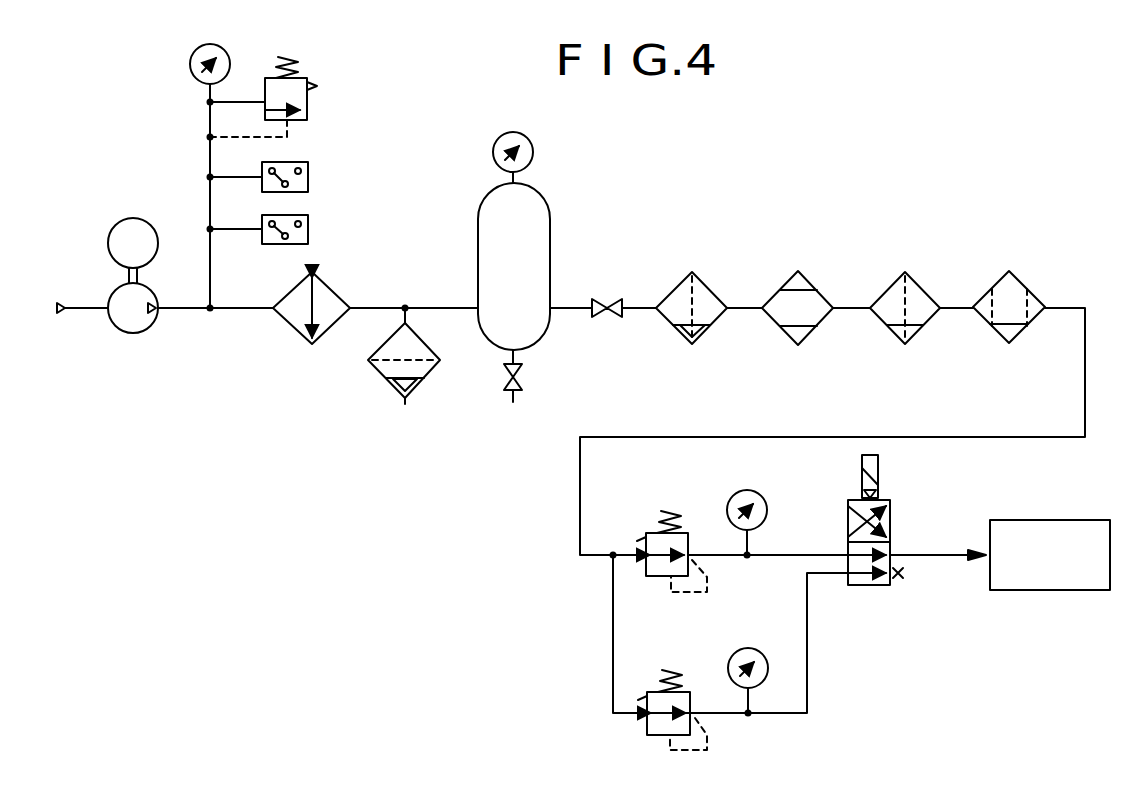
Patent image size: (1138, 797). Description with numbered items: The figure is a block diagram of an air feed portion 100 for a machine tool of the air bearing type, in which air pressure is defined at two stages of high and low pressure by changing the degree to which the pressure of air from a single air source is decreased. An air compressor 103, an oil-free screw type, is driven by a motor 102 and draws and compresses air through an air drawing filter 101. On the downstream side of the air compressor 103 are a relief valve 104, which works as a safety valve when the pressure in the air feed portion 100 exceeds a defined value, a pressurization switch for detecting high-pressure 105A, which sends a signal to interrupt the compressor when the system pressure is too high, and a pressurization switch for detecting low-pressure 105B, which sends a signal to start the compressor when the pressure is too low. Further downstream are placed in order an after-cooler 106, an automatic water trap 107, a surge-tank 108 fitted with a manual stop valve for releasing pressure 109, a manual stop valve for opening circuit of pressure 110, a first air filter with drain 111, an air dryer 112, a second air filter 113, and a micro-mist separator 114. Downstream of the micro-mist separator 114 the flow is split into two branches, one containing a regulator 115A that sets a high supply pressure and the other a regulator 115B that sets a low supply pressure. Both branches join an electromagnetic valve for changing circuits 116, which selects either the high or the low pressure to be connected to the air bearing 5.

The air feed portion 100 is at (846, 198).
The air drawing filter 101 is at (60, 316).
The motor 102 is at (126, 219).
The air compressor 103 is at (138, 334).
The relief valve 104 is at (309, 102).
The pressurization switch for detecting high-pressure 105A is at (308, 161).
The pressurization switch for detecting low-pressure 105B is at (308, 215).
The after-cooler 106 is at (290, 330).
The automatic water trap 107 is at (385, 377).
The surge-tank 108 is at (551, 212).
The manual stop valve for releasing pressure 109 is at (508, 392).
The manual stop valve for opening circuit of pressure 110 is at (597, 318).
The first air filter with drain 111 is at (670, 322).
The air dryer 112 is at (775, 322).
The second air filter 113 is at (880, 322).
The micro-mist separator 114 is at (988, 322).
The regulator 115A is at (655, 580).
The regulator 115B is at (660, 737).
The electromagnetic valve for changing circuits 116 is at (872, 587).
The air bearing 5 is at (1043, 592).